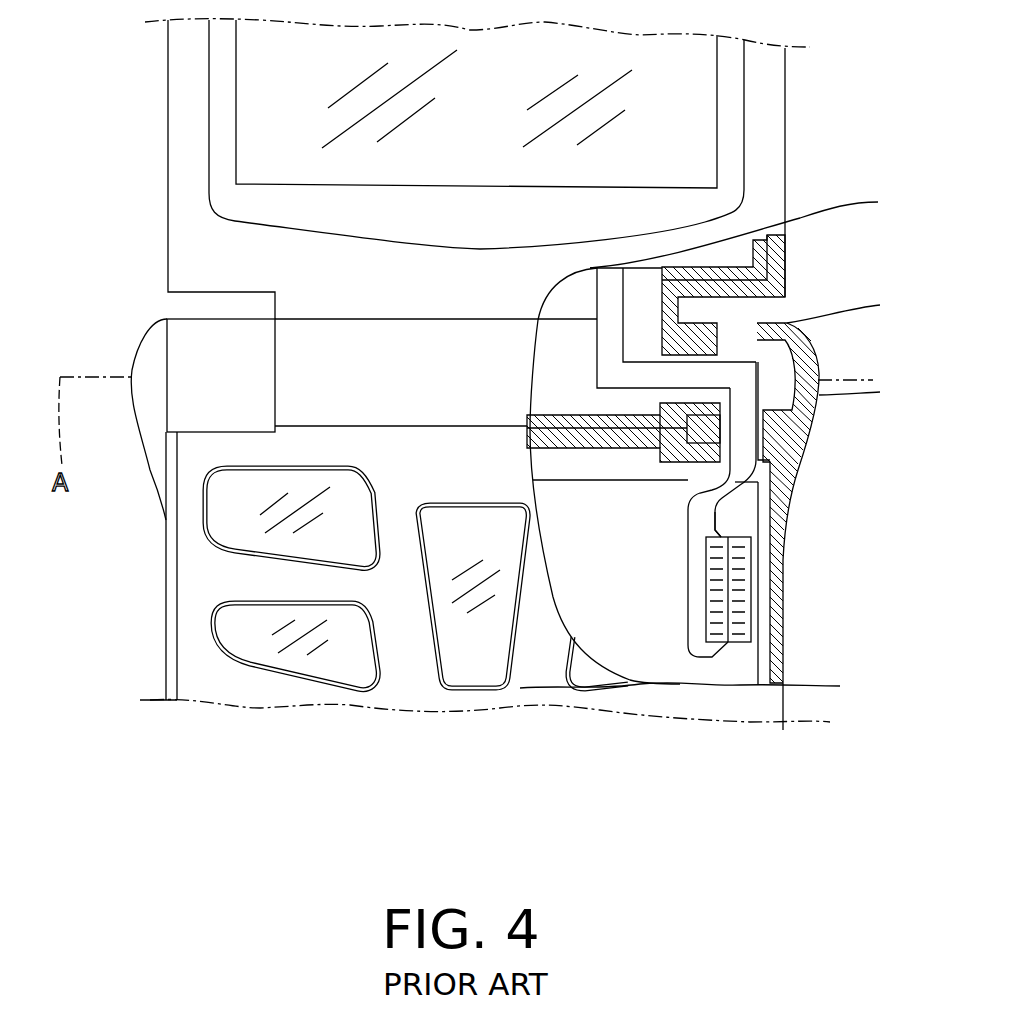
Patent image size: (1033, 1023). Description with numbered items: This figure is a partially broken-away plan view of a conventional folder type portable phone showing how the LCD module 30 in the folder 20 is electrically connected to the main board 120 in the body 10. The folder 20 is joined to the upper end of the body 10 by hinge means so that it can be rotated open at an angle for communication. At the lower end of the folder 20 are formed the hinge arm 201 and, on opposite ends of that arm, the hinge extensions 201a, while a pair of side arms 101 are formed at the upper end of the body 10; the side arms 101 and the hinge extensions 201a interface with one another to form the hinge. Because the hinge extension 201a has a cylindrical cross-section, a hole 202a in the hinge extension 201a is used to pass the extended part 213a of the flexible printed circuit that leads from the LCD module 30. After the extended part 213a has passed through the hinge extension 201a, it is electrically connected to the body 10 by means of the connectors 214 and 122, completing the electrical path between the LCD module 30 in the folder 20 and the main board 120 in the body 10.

The body 10 is at (206, 577).
The folder 20 is at (163, 190).
The LCD module 30 is at (258, 107).
The side arms 101 is at (197, 393).
The main board 120 is at (653, 638).
The connector 122 is at (737, 573).
The hinge arm 201 is at (323, 352).
The hinge extension 201a is at (770, 323).
The hole 202a is at (697, 400).
The extended part 213a is at (760, 410).
The connector 214 is at (727, 535).